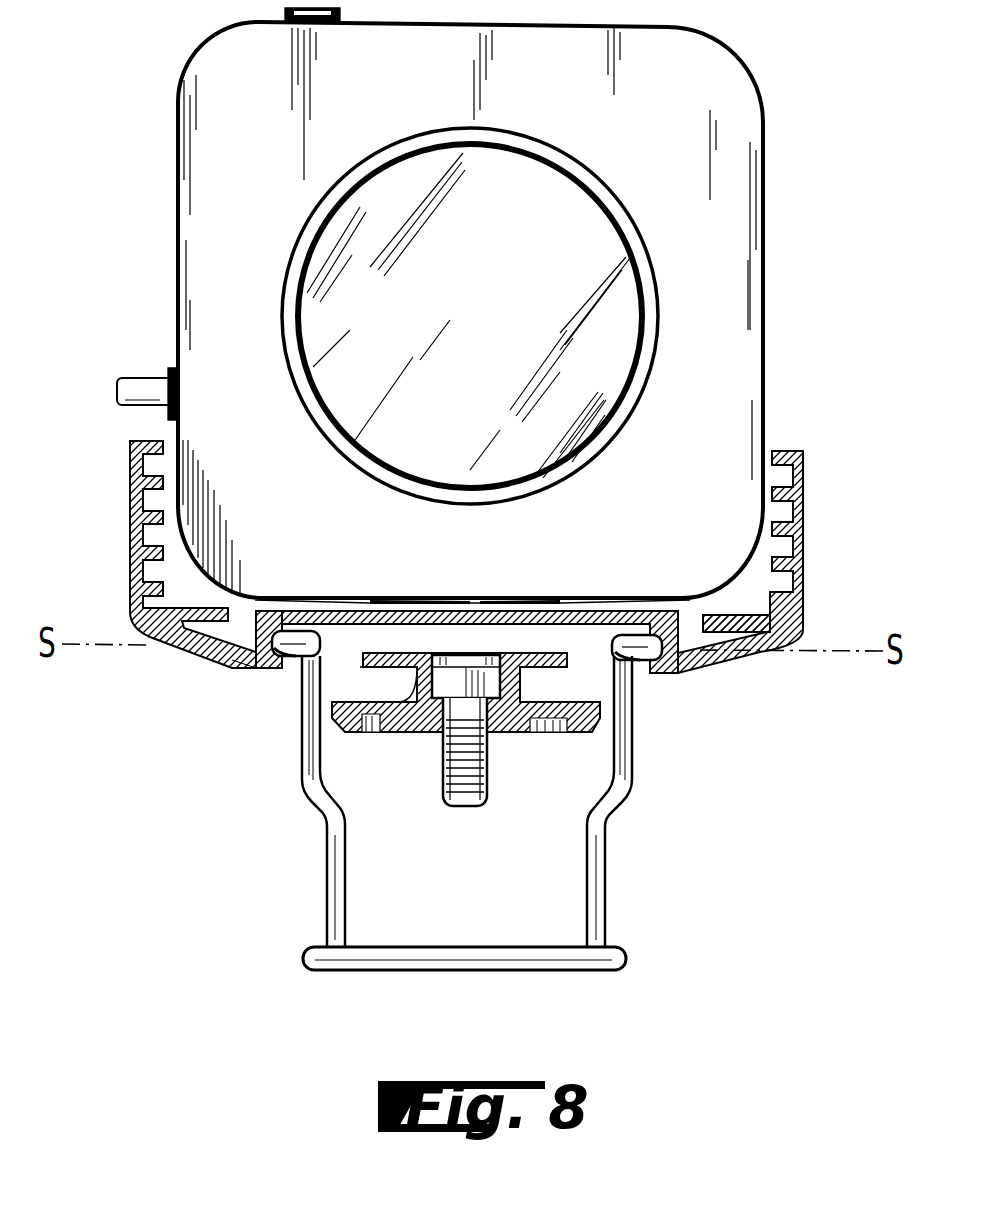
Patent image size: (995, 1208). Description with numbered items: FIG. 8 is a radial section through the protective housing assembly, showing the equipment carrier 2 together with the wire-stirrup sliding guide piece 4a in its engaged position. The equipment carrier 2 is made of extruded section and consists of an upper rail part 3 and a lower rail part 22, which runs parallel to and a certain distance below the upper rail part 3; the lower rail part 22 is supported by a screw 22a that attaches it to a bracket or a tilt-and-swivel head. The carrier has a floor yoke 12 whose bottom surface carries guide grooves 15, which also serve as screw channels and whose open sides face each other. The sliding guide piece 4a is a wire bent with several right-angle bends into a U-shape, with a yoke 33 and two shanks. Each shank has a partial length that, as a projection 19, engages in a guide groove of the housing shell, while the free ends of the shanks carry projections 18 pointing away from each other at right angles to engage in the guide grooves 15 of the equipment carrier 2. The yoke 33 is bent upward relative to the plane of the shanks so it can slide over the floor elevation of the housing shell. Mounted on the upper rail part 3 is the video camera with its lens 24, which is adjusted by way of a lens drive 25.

The equipment carrier 2 is at (813, 522).
The upper rail part 3 is at (788, 606).
The sliding guide piece 4a is at (499, 813).
The floor yoke 12 is at (498, 610).
The guide grooves 15 is at (286, 626).
The projections 18 is at (276, 670).
The projection 19 is at (332, 883).
The lower rail part 22 is at (420, 722).
The screw 22a is at (490, 765).
The lens 24 is at (522, 292).
The lens drive 25 is at (694, 173).
The yoke 33 is at (478, 960).